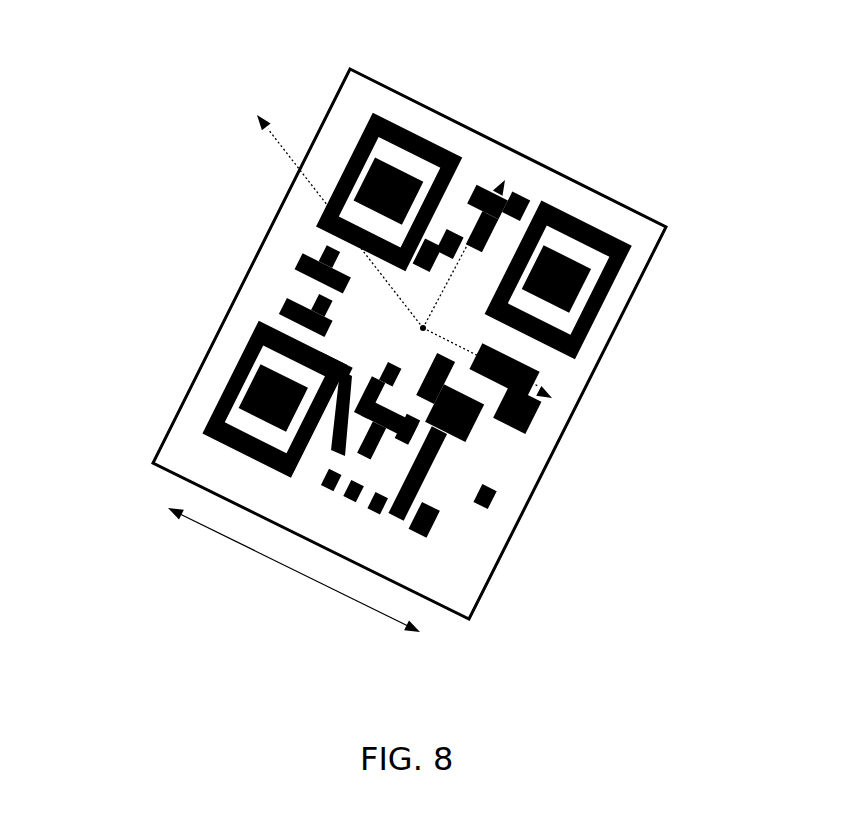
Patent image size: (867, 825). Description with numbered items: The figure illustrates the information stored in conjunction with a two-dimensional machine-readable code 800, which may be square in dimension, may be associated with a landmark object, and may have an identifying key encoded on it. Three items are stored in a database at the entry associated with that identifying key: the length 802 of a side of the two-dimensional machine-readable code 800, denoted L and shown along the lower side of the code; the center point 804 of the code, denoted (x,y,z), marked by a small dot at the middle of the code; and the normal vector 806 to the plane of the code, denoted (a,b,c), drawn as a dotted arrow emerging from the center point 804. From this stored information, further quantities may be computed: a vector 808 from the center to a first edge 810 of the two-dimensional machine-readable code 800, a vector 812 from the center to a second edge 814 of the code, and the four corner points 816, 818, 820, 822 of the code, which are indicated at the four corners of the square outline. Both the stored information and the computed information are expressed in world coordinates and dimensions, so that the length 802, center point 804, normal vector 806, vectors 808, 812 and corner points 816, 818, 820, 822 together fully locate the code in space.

The two-dimensional machine-readable code 800 is at (626, 185).
The length 802 is at (290, 573).
The center point 804 is at (407, 330).
The normal vector 806 is at (263, 151).
The vector to first edge 808 is at (462, 294).
The first edge 810 is at (500, 154).
The vector to second edge 812 is at (455, 355).
The second edge 814 is at (568, 395).
The corner point 816 is at (365, 92).
The corner point 818 is at (184, 438).
The corner point 820 is at (474, 570).
The corner point 822 is at (645, 250).